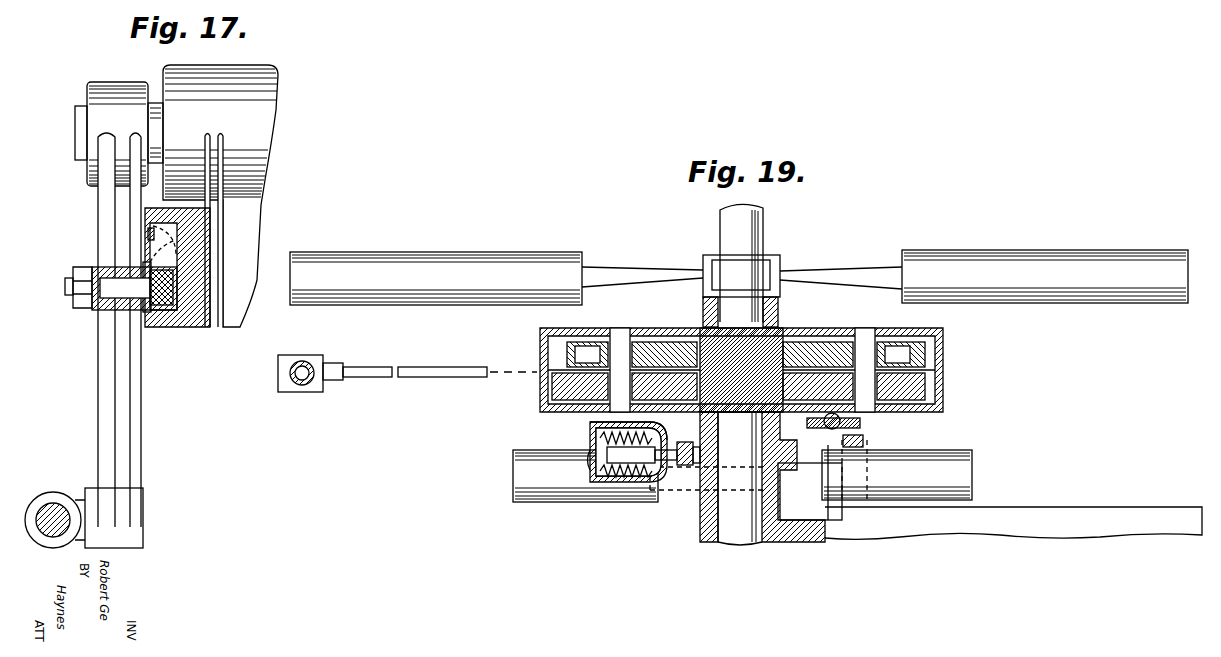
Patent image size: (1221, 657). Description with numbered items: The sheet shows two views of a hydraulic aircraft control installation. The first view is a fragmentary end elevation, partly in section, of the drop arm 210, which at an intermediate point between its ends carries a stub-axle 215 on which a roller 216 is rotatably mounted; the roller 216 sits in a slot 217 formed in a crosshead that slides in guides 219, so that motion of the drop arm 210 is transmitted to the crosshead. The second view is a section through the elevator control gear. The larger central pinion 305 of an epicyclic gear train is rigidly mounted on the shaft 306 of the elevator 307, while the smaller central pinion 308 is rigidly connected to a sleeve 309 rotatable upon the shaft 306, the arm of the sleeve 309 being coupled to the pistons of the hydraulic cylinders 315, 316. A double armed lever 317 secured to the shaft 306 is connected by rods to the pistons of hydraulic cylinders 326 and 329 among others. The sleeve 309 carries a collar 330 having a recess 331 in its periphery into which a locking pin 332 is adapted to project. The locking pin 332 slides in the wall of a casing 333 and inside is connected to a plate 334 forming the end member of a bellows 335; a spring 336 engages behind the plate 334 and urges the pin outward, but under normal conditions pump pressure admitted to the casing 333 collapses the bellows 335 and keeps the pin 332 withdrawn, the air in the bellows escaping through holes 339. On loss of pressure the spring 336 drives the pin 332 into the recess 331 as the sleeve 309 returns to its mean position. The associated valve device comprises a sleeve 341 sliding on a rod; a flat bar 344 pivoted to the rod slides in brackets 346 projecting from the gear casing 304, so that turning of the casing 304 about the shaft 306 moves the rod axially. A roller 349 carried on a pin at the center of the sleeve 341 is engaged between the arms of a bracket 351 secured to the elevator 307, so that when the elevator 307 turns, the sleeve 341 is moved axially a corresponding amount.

In FIG. 17, the drop arm 210 is at (107, 234).
In FIG. 17, the stub-axle 215 is at (100, 311).
In FIG. 17, the roller 216 is at (165, 328).
In FIG. 17, the slot 217 is at (168, 248).
In FIG. 17, the guides 219 is at (182, 207).
In FIG. 19, the casing of epicyclic gear train 304 is at (943, 354).
In FIG. 19, the larger central pinion 305 is at (790, 336).
In FIG. 19, the shaft 306 is at (721, 227).
In FIG. 19, the elevator 307 is at (1032, 512).
In FIG. 19, the smaller central pinion 308 is at (739, 477).
In FIG. 19, the sleeve 309 is at (706, 467).
In FIG. 19, the hydraulic cylinder 315 is at (960, 461).
In FIG. 19, the hydraulic cylinder 316 is at (530, 502).
In FIG. 19, the double armed lever 317 is at (752, 268).
In FIG. 19, the hydraulic cylinder 326 is at (1027, 303).
In FIG. 19, the hydraulic cylinder 329 is at (410, 302).
In FIG. 19, the collar 330 is at (795, 470).
In FIG. 19, the recess 331 is at (690, 464).
In FIG. 19, the locking pin 332 is at (680, 443).
In FIG. 19, the casing 333 is at (625, 482).
In FIG. 19, the plate 334 is at (647, 481).
In FIG. 19, the bellows 335 is at (590, 432).
In FIG. 19, the spring 336 is at (603, 470).
In FIG. 19, the holes 339 is at (600, 450).
In FIG. 19, the sleeve 341 is at (830, 443).
In FIG. 19, the flat bar 344 is at (860, 428).
In FIG. 19, the brackets 346 is at (860, 421).
In FIG. 19, the roller 349 is at (828, 520).
In FIG. 19, the bracket 351 is at (862, 456).